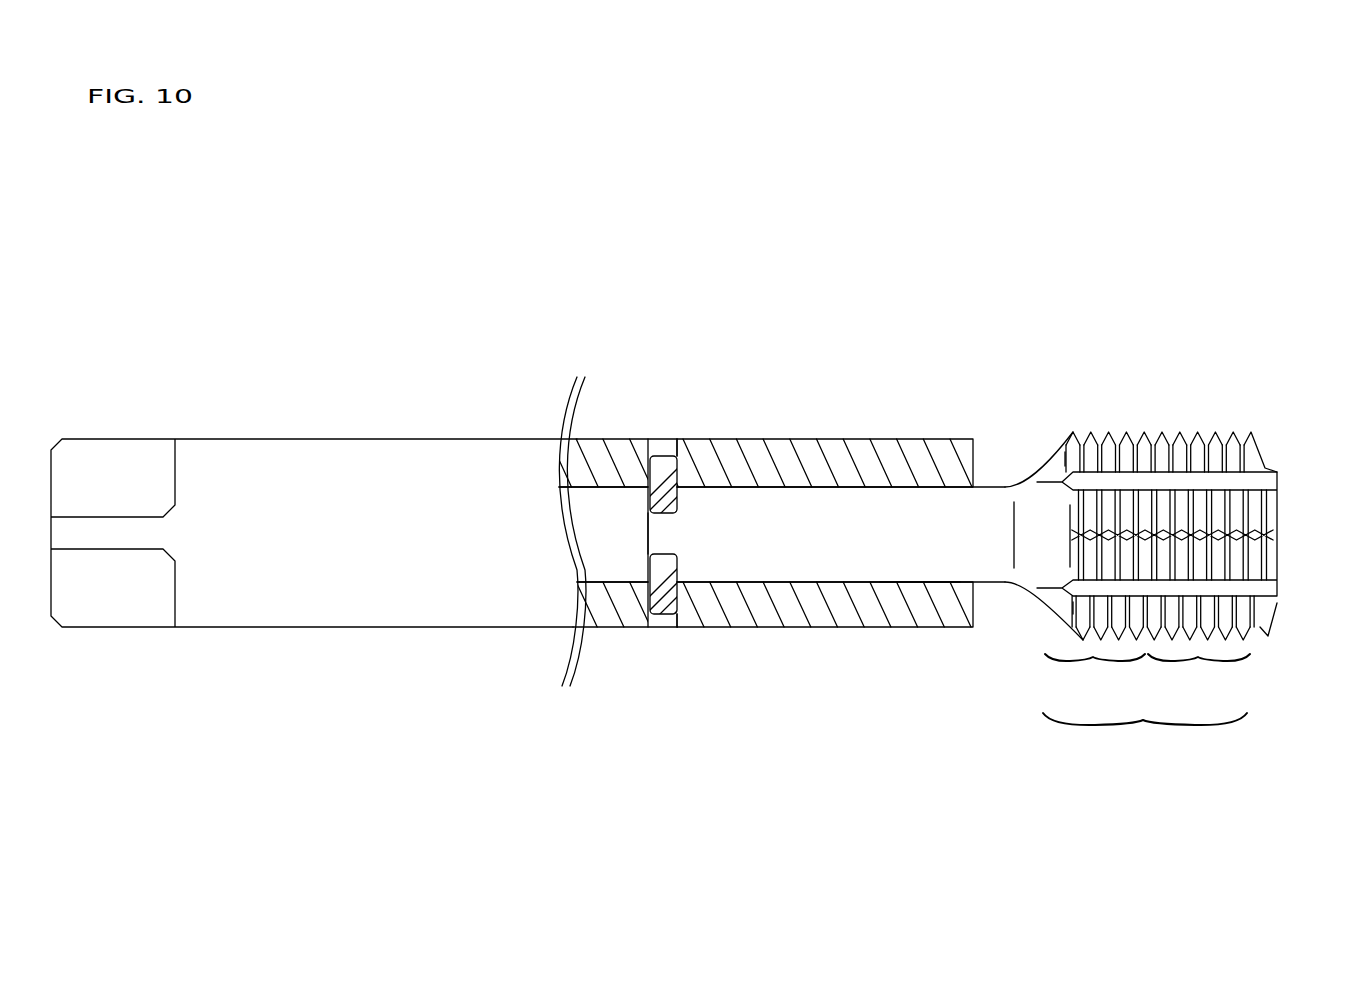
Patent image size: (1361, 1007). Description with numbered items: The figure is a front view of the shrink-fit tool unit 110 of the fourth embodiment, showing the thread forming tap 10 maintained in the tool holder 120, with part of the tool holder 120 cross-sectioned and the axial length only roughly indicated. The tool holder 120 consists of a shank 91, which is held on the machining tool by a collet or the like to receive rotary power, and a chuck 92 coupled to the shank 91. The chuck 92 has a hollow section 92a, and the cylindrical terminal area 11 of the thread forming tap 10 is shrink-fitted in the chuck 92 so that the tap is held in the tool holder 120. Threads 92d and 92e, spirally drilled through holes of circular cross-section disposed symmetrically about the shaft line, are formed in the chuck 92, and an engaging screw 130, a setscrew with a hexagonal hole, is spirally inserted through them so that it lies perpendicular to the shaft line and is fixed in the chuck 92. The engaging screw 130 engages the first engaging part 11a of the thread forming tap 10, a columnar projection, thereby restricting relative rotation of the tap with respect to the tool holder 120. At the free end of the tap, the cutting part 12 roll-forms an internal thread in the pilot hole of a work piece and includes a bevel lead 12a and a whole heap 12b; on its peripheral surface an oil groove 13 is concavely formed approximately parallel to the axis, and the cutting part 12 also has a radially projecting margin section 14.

The thread forming tap 10 is at (1202, 380).
The cylindrical terminal area 11 is at (740, 568).
The first engaging part 11a is at (648, 535).
The cutting part 12 is at (1145, 733).
The bevel lead 12a is at (1199, 673).
The whole heap 12b is at (1095, 673).
The oil groove 13 is at (1062, 481).
The margin section 14 is at (1080, 535).
The shank 91 is at (350, 446).
The chuck 92 is at (788, 457).
The hollow section 92a is at (870, 580).
The thread 92d is at (669, 439).
The thread 92e is at (675, 616).
The shrink-fit tool unit 110 is at (1053, 223).
The tool holder 120 is at (618, 331).
The engaging screw 130 is at (650, 457).